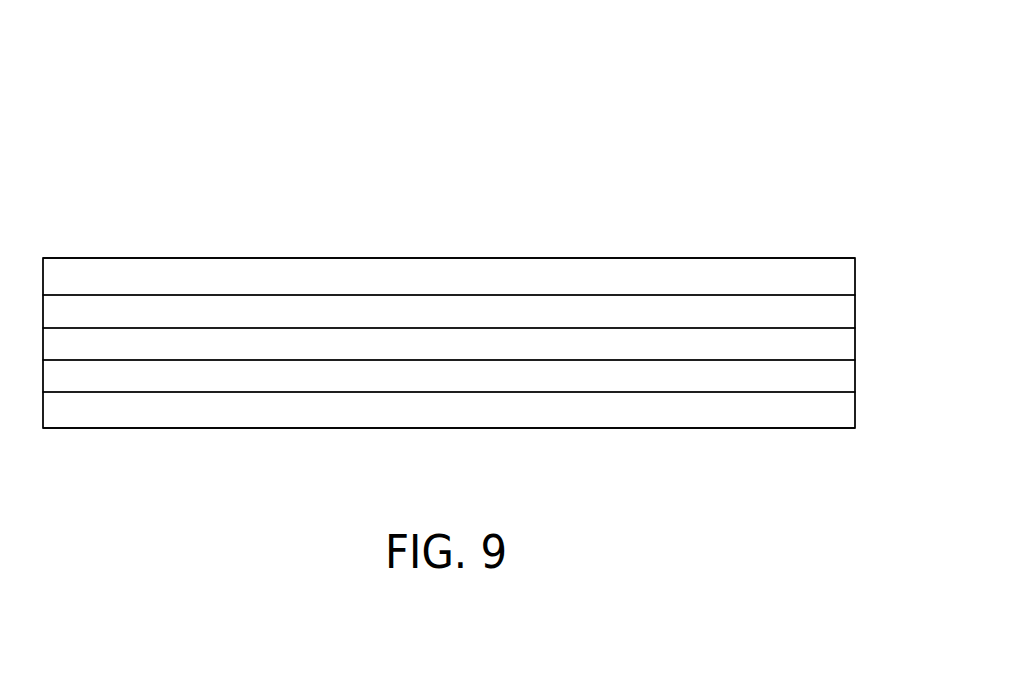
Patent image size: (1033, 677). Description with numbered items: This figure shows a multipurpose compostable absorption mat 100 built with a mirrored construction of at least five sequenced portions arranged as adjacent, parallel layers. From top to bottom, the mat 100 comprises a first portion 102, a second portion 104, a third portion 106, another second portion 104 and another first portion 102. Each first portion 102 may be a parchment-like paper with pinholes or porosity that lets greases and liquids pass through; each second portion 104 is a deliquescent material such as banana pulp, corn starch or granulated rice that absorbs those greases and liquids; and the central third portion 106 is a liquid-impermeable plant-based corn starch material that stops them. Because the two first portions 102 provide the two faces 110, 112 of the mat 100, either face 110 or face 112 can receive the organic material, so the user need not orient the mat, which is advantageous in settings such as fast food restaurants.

The multipurpose compostable absorption mat 100 is at (674, 92).
The first portion 102 is at (357, 261).
The second portion 104 is at (426, 296).
The third portion 106 is at (517, 330).
The face 110 is at (776, 242).
The face 112 is at (712, 442).